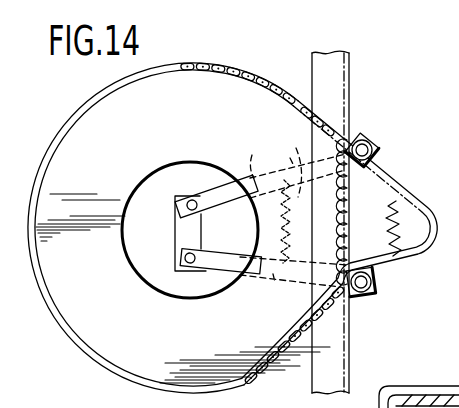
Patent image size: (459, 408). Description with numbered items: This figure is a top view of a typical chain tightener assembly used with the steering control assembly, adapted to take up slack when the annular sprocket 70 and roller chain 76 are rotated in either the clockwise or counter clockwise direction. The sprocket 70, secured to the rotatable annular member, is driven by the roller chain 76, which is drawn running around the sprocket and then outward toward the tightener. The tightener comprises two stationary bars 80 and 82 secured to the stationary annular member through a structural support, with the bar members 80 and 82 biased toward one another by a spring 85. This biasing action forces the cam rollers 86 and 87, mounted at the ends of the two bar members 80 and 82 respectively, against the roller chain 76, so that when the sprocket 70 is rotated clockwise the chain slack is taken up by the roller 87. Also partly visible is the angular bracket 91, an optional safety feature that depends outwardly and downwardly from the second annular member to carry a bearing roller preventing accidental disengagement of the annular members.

The annular sprocket 70 is at (179, 228).
The roller chain 76 is at (250, 58).
The stationary bar 80 is at (258, 148).
The stationary bar 82 is at (275, 286).
The spring 85 is at (300, 138).
The cam roller 86 is at (380, 138).
The cam roller 87 is at (374, 283).
The angular bracket 91 is at (440, 356).